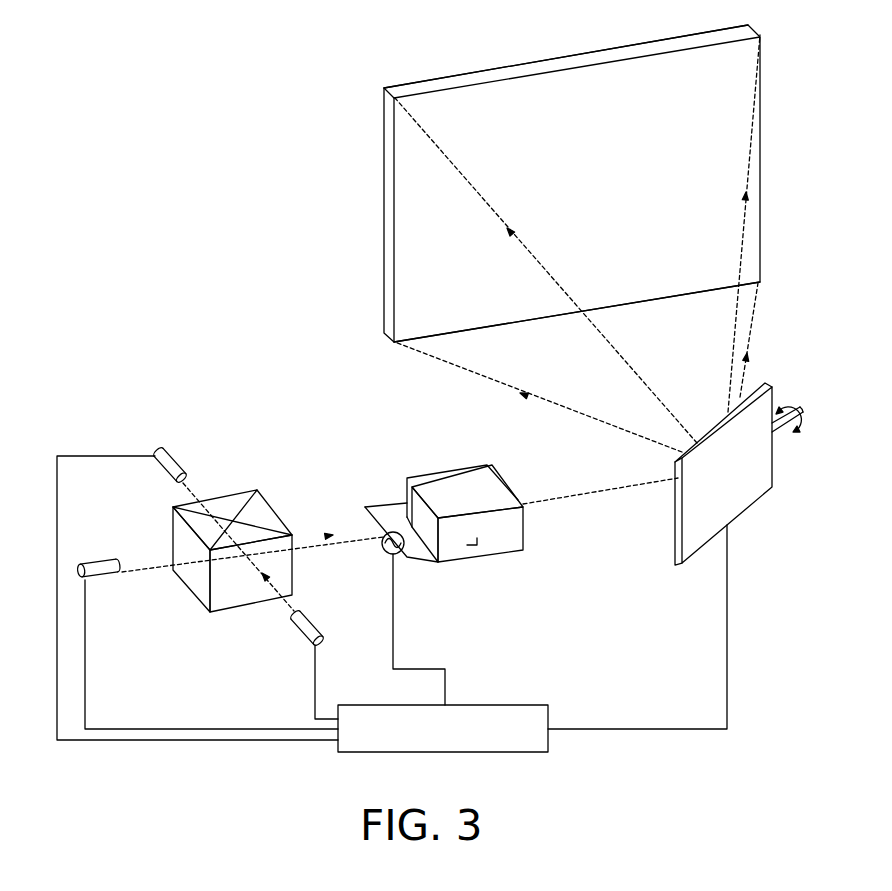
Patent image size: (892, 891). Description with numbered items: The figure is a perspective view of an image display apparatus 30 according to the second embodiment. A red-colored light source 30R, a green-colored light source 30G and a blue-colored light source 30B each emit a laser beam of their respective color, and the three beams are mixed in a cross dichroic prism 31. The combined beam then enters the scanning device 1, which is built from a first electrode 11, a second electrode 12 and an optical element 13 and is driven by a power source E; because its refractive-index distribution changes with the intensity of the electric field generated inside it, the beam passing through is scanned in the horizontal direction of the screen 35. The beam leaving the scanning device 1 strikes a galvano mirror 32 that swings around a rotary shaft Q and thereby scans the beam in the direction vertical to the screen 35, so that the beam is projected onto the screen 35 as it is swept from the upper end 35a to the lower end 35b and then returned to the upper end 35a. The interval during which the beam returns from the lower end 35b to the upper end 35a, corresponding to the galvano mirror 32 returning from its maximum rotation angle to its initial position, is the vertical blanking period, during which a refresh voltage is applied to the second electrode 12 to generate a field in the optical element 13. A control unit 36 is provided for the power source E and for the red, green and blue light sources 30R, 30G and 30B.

The image display apparatus 30 is at (165, 133).
The red-colored light source 30R is at (157, 450).
The green-colored light source 30G is at (105, 583).
The blue-colored light source 30B is at (295, 630).
The cross dichroic prism 31 is at (247, 490).
The scanning device 1 is at (483, 572).
The first electrode 11 is at (430, 473).
The second electrode 12 is at (508, 507).
The optical element 13 is at (492, 483).
The power source E is at (382, 550).
The galvano mirror 32 is at (765, 490).
The rotary shaft Q is at (804, 407).
The screen 35 is at (384, 208).
The upper end of screen 35a is at (552, 62).
The lower end of screen 35b is at (660, 300).
The control unit 36 is at (528, 703).